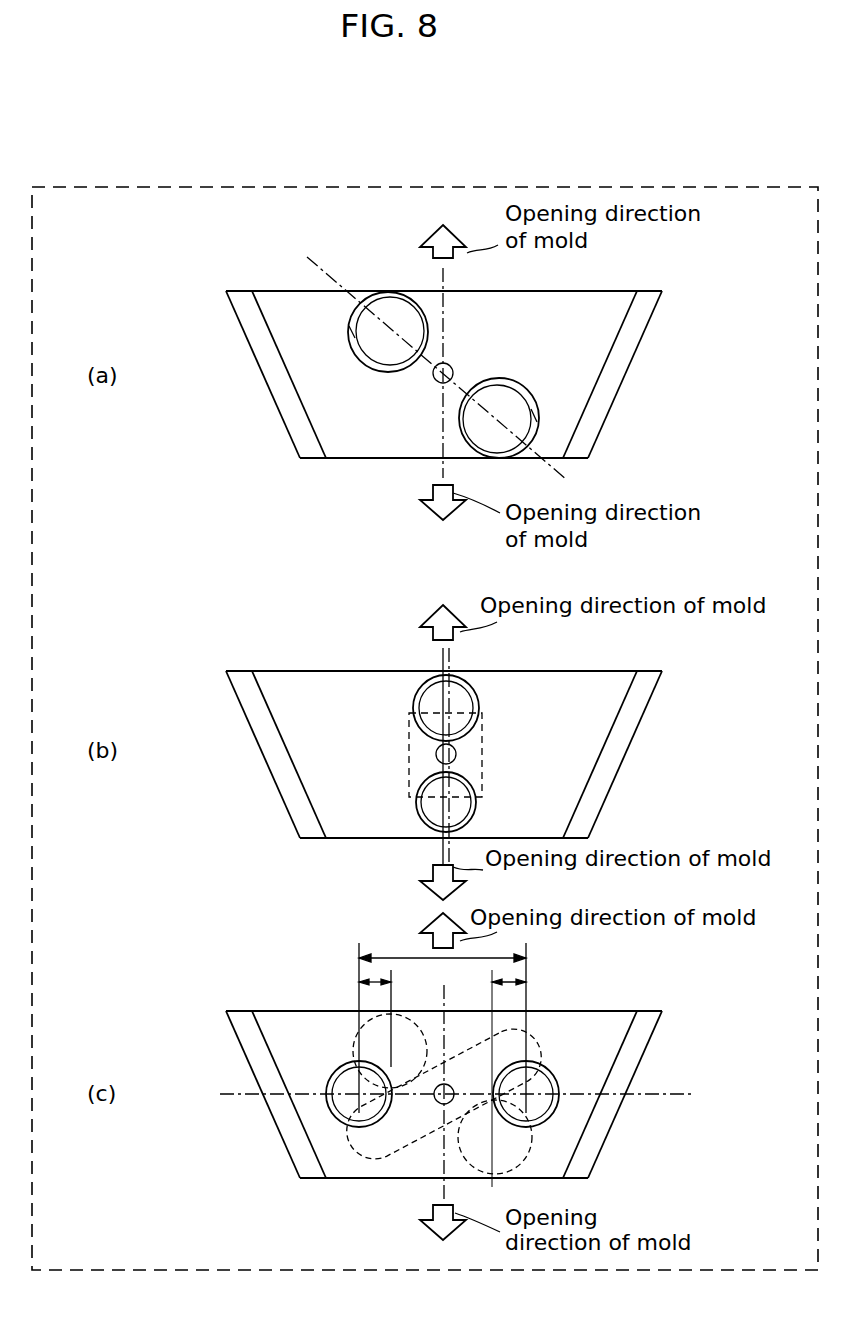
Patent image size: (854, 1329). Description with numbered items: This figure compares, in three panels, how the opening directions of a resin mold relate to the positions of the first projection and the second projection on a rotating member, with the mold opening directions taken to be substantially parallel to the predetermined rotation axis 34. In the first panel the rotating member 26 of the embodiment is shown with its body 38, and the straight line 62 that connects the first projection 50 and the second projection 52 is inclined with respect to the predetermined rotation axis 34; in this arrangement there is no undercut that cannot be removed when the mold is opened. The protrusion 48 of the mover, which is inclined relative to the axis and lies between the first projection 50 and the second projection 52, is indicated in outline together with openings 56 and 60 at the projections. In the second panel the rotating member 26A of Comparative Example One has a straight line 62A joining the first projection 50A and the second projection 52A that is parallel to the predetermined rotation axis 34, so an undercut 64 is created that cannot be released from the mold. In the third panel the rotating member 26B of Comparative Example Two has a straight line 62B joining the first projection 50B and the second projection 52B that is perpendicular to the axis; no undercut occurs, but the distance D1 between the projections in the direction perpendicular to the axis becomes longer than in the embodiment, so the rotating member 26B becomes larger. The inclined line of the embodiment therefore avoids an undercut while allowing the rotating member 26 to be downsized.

The rotating member 26 is at (625, 291).
The rotating member 26A is at (622, 671).
The rotating member 26B is at (590, 1011).
The predetermined rotation axis 34 is at (447, 273).
The body 38 is at (600, 342).
The protrusion 48 is at (379, 1178).
The first projection 50 is at (520, 406).
The first projection 50A is at (412, 802).
The first projection 50B is at (553, 1066).
The second projection 52 is at (350, 330).
The second projection 52A is at (478, 697).
The second projection 52B is at (334, 1081).
The second opening 56 is at (525, 420).
The first opening 60 is at (350, 343).
The straight line 62 is at (565, 475).
The straight line 62A is at (452, 656).
The straight line 62B is at (686, 1094).
The undercut 64 is at (485, 745).
The distance D1 is at (405, 956).